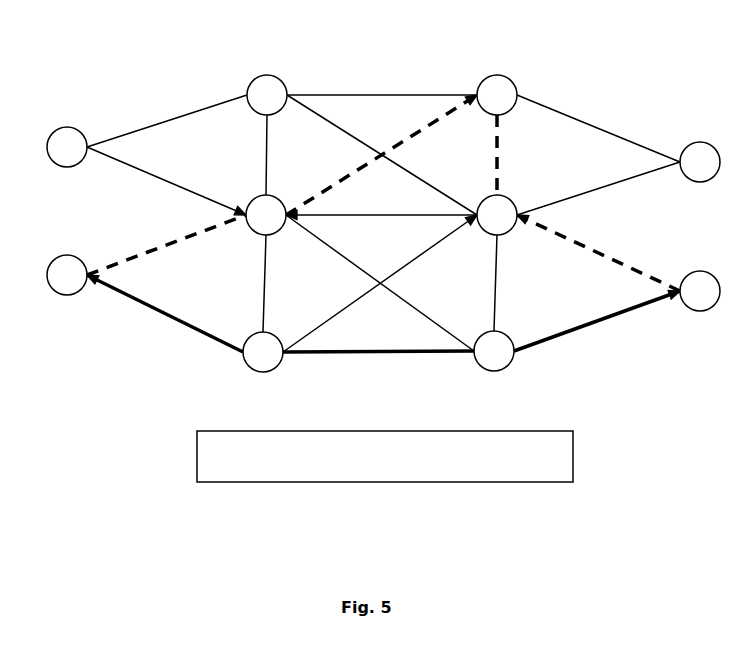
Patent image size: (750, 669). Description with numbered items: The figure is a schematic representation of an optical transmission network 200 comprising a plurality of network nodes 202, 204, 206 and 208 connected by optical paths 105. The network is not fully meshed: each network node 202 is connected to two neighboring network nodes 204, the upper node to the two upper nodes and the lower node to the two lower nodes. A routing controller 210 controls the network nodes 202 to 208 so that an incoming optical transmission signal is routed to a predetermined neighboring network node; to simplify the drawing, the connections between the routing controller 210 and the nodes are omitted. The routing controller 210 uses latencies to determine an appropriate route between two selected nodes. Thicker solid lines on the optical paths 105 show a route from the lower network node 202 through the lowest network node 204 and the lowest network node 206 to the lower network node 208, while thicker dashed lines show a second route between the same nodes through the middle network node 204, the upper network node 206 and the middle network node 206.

The optical transmission network 200 is at (402, 49).
The optical paths 105 is at (183, 118).
The network nodes 202 is at (70, 138).
The network nodes 204 is at (268, 112).
The network nodes 206 is at (497, 110).
The network nodes 208 is at (700, 152).
The routing controller 210 is at (468, 476).